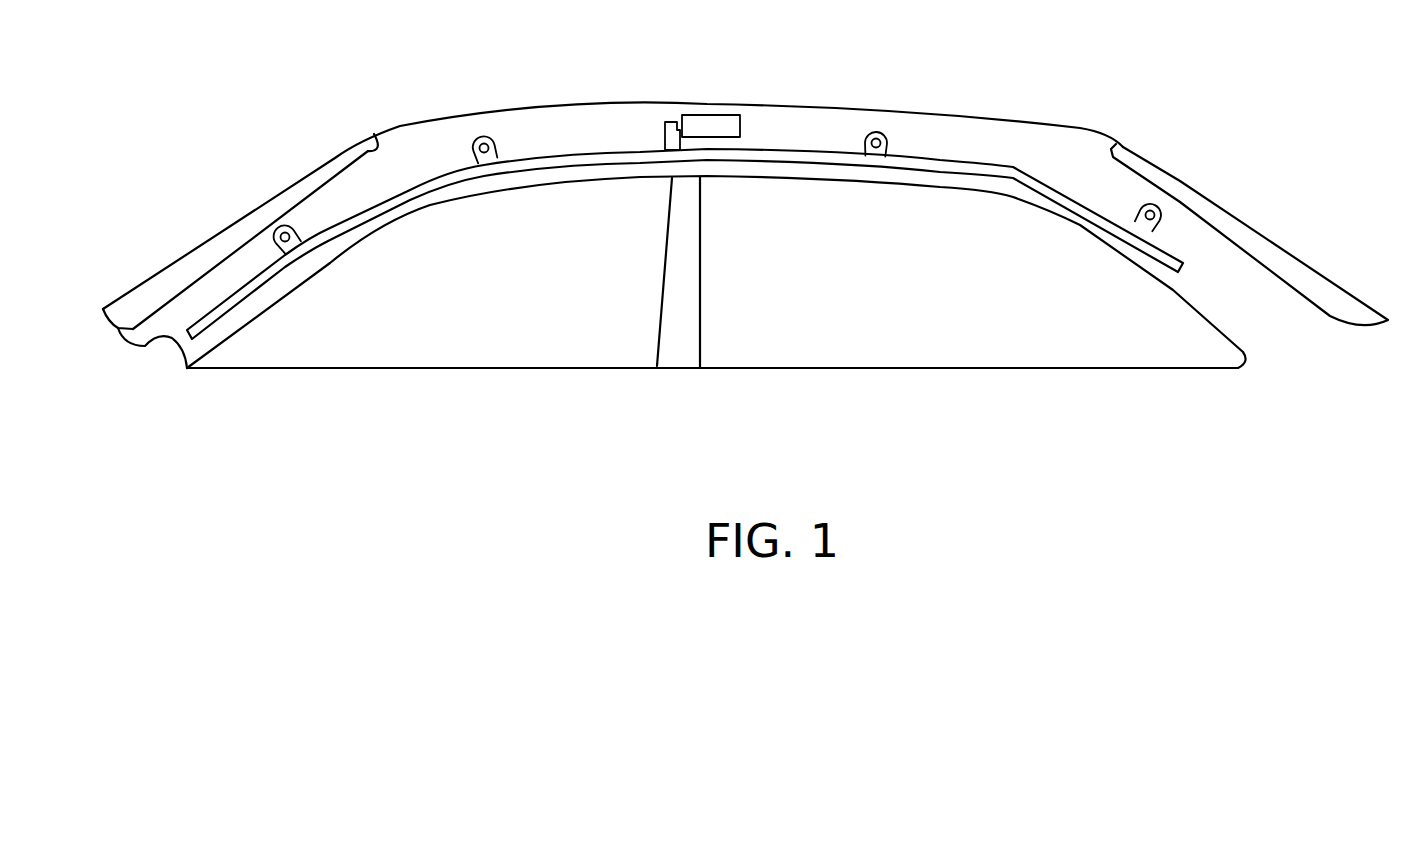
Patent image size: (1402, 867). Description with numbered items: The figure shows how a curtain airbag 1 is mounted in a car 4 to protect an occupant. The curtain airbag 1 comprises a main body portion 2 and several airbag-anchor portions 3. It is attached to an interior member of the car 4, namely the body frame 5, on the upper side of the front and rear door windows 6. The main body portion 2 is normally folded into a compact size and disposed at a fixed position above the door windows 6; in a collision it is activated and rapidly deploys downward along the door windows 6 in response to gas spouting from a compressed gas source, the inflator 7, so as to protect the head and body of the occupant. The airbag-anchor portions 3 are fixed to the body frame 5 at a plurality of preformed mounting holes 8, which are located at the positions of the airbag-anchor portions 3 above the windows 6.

The curtain airbag 1 is at (608, 104).
The main body portion 2 is at (220, 318).
The airbag-anchor portions 3 is at (245, 208).
The car 4 is at (1045, 86).
The body frame 5 is at (165, 344).
The door windows 6 is at (494, 332).
The inflator 7 is at (710, 122).
The mounting holes 8 is at (285, 226).